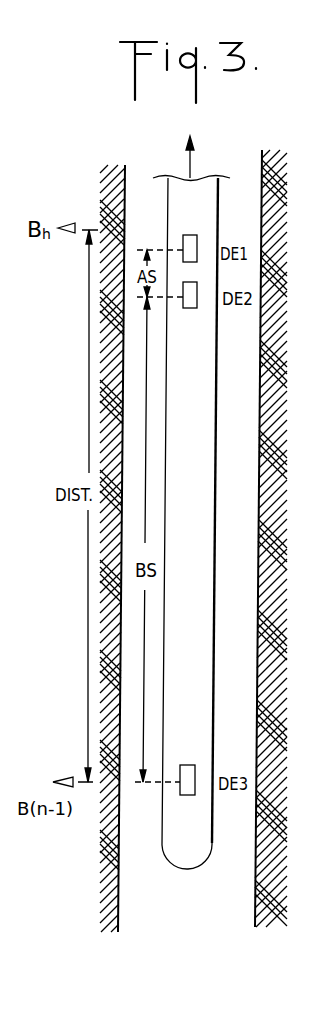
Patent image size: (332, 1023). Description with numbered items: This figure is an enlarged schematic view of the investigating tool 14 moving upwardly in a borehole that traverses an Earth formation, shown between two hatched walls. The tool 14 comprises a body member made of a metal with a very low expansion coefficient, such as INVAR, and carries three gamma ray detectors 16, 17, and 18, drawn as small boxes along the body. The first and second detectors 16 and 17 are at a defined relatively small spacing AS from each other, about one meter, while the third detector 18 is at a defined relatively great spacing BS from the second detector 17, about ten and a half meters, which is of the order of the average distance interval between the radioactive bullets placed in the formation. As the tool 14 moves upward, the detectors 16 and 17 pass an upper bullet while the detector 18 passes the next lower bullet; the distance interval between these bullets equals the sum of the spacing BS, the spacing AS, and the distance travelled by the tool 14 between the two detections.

The investigating tool 14 is at (197, 522).
The first gamma ray detector 16 is at (195, 241).
The second gamma ray detector 17 is at (196, 301).
The third gamma ray detector 18 is at (192, 796).